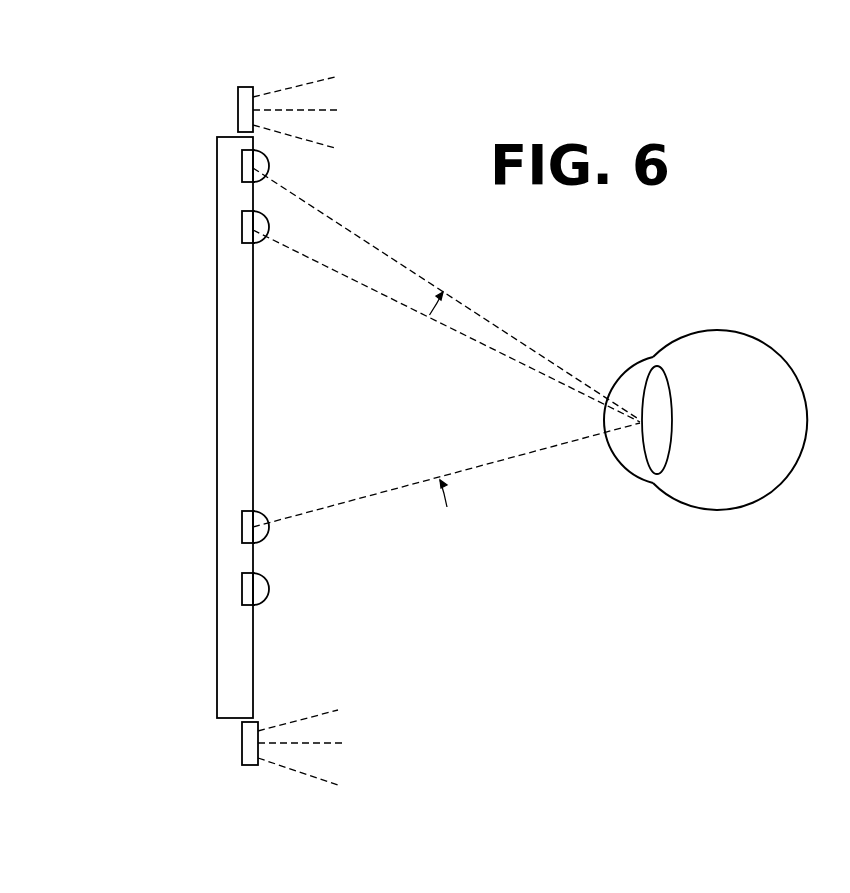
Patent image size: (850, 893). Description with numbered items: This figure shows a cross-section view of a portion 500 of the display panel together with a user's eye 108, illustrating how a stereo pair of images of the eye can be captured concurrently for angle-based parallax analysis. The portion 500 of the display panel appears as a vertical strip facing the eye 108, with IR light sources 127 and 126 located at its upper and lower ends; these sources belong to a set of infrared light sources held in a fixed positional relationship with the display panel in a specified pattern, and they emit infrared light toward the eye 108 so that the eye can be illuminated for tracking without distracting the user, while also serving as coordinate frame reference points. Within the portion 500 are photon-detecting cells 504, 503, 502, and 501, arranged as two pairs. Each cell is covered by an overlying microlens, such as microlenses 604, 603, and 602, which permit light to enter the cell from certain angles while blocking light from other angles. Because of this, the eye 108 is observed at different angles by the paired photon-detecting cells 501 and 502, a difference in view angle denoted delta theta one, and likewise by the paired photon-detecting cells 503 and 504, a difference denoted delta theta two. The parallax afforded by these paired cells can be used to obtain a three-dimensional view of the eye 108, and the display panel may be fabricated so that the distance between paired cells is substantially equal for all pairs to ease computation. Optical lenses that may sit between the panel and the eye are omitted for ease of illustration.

The portion of the display panel 500 is at (217, 355).
The IR light source 127 is at (238, 112).
The IR light source 126 is at (242, 743).
The photon-detecting cell 501 is at (486, 442).
The photon-detecting cell 502 is at (242, 529).
The photon-detecting cell 503 is at (242, 230).
The photon-detecting cell 504 is at (242, 168).
The microlens 602 is at (263, 539).
The microlens 603 is at (268, 230).
The microlens 604 is at (268, 168).
The eye 108 is at (705, 331).